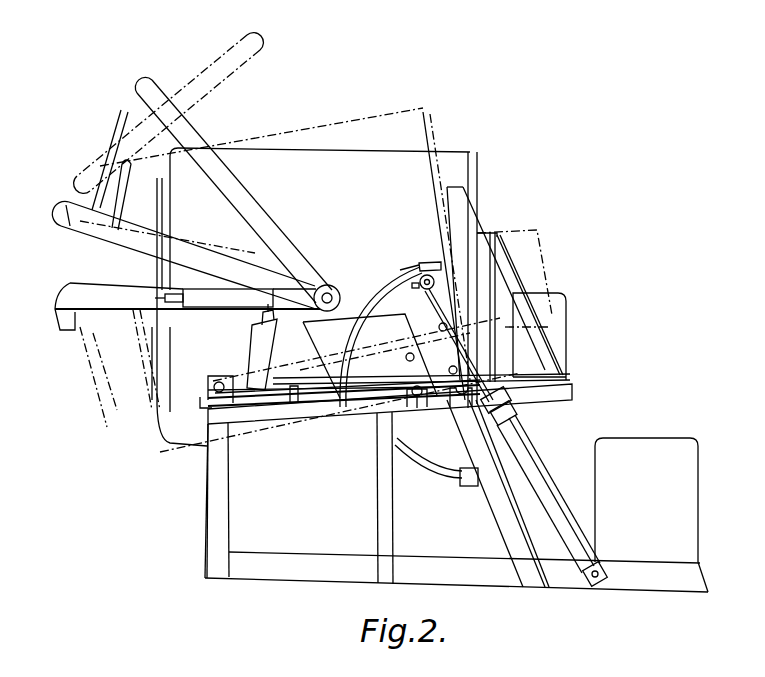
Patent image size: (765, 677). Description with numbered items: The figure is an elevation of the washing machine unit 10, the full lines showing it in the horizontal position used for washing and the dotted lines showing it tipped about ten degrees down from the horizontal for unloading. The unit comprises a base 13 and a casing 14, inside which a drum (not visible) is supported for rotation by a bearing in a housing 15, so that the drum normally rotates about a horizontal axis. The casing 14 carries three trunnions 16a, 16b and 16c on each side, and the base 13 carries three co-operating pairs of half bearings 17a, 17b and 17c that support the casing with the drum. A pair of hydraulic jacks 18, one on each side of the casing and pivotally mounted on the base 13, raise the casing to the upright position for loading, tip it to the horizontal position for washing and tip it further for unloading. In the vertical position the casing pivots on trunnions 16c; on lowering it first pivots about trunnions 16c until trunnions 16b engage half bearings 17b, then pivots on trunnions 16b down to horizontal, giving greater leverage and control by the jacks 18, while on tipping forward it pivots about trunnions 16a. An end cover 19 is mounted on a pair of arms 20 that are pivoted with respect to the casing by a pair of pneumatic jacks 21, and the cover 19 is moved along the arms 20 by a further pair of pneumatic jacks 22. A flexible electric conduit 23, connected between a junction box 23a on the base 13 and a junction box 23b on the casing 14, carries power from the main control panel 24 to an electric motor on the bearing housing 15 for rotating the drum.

The washing machine unit 10 is at (492, 177).
The base 13 is at (215, 513).
The casing 14 is at (292, 157).
The bearing housing 15 is at (558, 299).
The trunnions 16a is at (220, 382).
The trunnions 16b is at (413, 400).
The trunnions 16c is at (512, 398).
The half bearings 17a is at (205, 391).
The half bearings 17b is at (414, 406).
The half bearings 17c is at (456, 405).
The hydraulic jacks 18 is at (535, 466).
The end cover 19 is at (217, 72).
The arms 20 is at (322, 290).
The pneumatic jacks 21 is at (256, 346).
The pneumatic jacks 22 is at (217, 290).
The flexible electric conduit 23 is at (367, 298).
The junction box 23a is at (468, 486).
The junction box 23b is at (425, 263).
The main control panel 24 is at (655, 452).